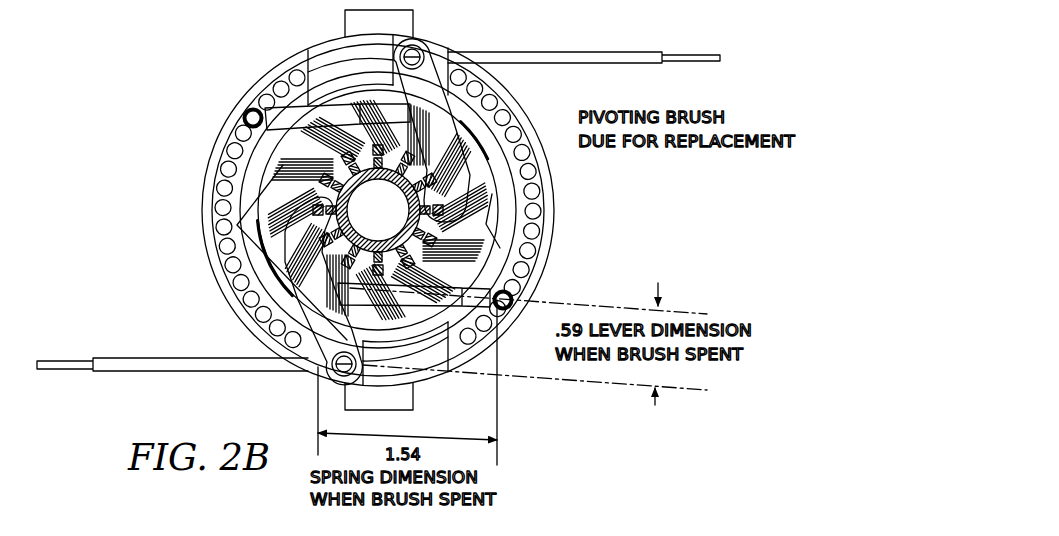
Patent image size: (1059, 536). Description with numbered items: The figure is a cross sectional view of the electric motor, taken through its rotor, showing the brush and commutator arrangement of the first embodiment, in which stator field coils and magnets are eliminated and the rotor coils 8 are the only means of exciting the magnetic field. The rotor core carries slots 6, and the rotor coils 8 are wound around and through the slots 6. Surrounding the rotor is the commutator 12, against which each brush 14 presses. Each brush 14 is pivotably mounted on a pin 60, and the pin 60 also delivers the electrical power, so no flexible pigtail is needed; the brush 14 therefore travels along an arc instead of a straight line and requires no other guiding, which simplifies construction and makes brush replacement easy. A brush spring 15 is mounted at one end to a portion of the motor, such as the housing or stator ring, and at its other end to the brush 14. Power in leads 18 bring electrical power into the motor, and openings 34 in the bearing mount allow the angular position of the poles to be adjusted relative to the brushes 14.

The slots 6 is at (487, 247).
The rotor coils 8 is at (492, 194).
The commutator 12 is at (283, 165).
The brush 14 is at (466, 118).
The brush spring 15 is at (300, 117).
The power in leads 18 is at (562, 58).
The openings 34 is at (243, 128).
The pin 60 is at (416, 46).